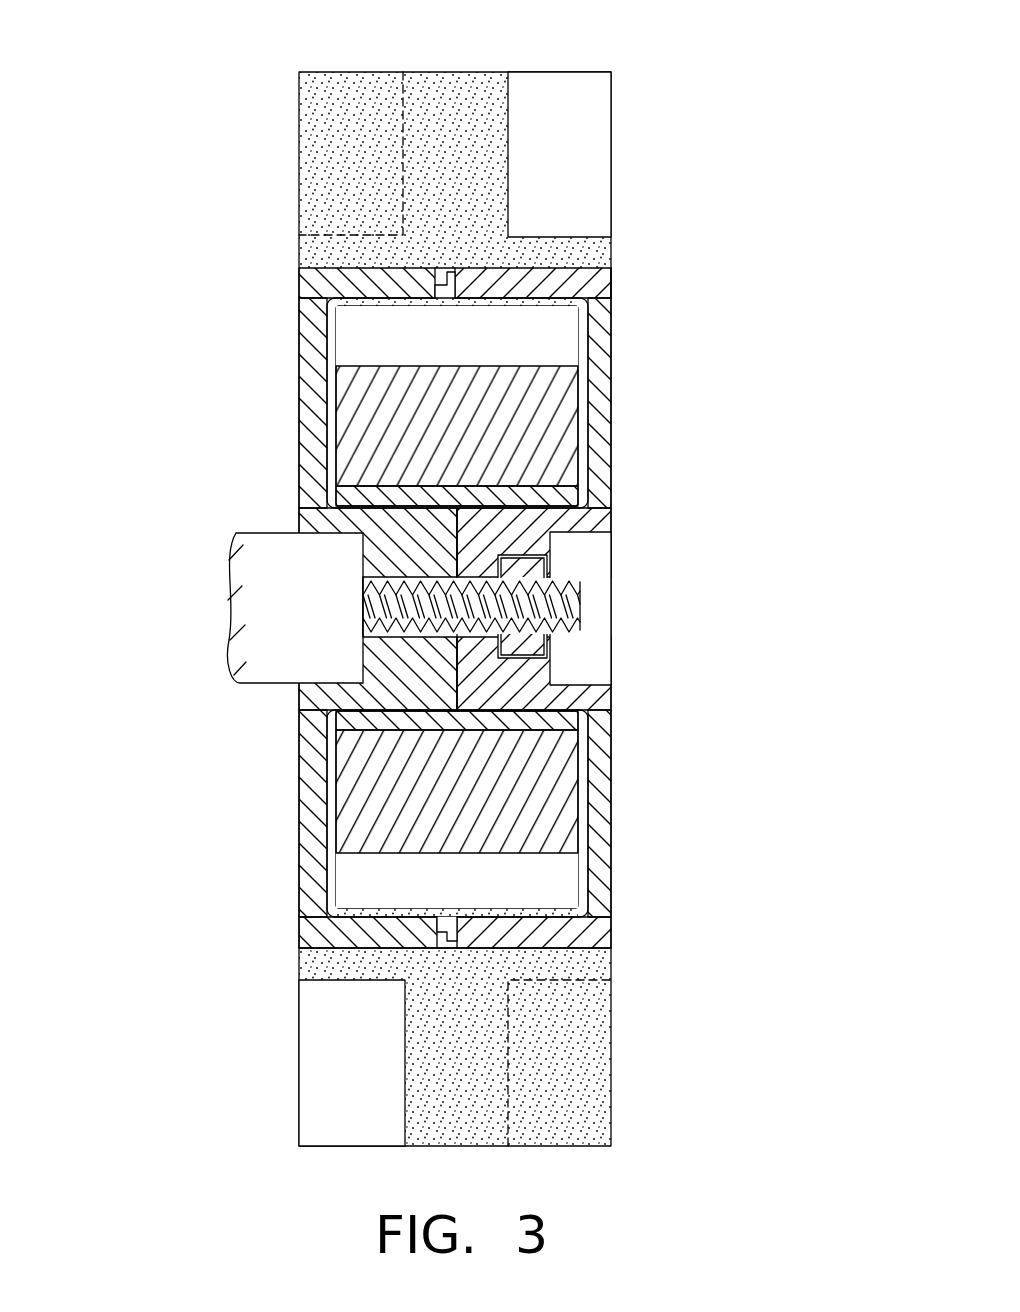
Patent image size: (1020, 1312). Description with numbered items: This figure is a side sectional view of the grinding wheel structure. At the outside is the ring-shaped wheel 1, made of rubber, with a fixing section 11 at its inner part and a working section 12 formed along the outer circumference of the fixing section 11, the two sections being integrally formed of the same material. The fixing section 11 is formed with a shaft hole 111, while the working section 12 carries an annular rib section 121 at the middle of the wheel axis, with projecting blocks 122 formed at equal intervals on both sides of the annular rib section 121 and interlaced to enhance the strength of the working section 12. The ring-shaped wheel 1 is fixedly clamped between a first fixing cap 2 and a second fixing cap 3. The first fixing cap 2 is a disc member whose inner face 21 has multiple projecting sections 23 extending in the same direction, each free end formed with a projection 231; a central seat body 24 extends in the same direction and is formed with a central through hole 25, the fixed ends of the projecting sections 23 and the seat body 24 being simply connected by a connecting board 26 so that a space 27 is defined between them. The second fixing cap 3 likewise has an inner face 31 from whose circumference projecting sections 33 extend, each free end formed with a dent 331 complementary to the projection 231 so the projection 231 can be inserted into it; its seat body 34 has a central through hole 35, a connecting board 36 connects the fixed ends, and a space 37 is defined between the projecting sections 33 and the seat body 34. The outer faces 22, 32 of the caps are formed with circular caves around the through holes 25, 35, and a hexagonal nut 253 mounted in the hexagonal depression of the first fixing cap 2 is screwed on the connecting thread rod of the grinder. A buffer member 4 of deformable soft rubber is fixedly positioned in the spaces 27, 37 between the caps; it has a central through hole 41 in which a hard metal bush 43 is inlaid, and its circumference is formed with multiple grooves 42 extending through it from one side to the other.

The ring-shaped wheel 1 is at (260, 175).
The fixing section 11 is at (636, 285).
The shaft hole 111 is at (537, 300).
The working section 12 is at (555, 178).
The annular rib section 121 is at (458, 72).
The projecting blocks 122 is at (370, 72).
The first fixing cap 2 is at (593, 475).
The inner face 21 is at (570, 347).
The outer face 22 is at (612, 453).
The projecting sections 23 is at (543, 288).
The projection 231 is at (448, 290).
The seat body 24 is at (560, 553).
The through hole 25 is at (380, 584).
The hexagonal nut 253 is at (520, 643).
The connecting board 26 is at (597, 807).
The space 27 is at (543, 910).
The second fixing cap 3 is at (312, 430).
The inner face 31 is at (338, 340).
The outer face 32 is at (298, 380).
The projecting sections 33 is at (373, 932).
The dent 331 is at (443, 925).
The seat body 34 is at (360, 665).
The through hole 35 is at (362, 596).
The connecting board 36 is at (317, 800).
The space 37 is at (400, 918).
The buffer member 4 is at (520, 773).
The through hole 41 is at (547, 702).
The grooves 42 is at (542, 880).
The hard metal bush 43 is at (515, 544).